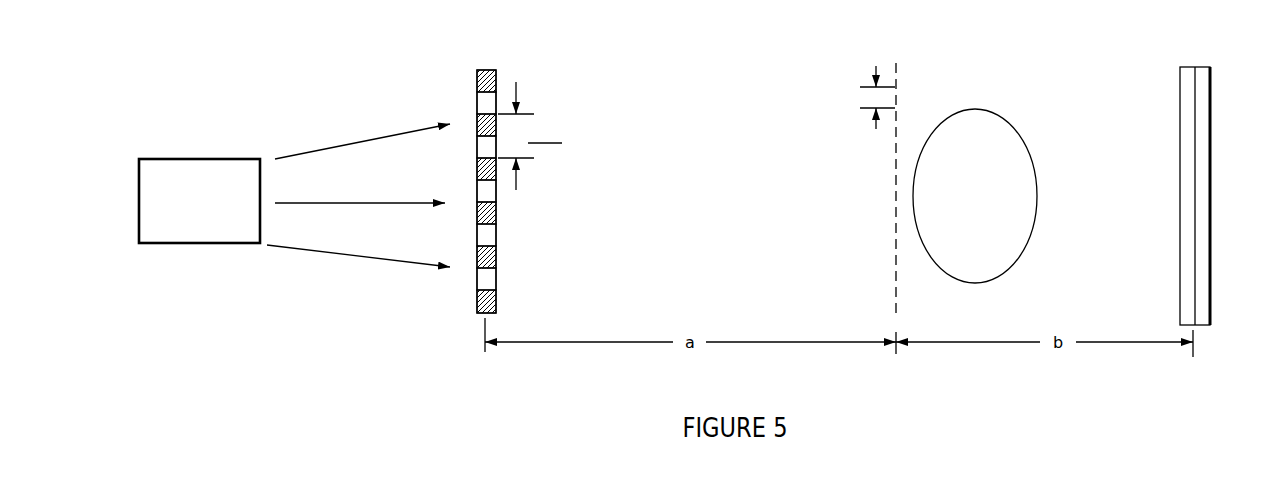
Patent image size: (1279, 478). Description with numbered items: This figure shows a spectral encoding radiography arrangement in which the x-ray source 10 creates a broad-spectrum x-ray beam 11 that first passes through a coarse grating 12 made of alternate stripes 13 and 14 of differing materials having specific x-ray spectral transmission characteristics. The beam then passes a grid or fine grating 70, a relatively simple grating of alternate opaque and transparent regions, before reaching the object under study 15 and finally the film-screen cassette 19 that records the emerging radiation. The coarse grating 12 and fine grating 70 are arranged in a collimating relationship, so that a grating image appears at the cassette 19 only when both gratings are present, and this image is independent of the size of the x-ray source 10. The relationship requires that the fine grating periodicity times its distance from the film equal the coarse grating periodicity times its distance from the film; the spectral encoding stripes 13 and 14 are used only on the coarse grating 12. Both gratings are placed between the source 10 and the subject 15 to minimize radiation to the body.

The x-ray source 10 is at (212, 244).
The x-ray beam 11 is at (358, 208).
The coarse grating 12 is at (550, 206).
The stripe 13 is at (496, 222).
The stripe 14 is at (496, 240).
The object under study 15 is at (993, 110).
The film-screen cassette 19 is at (1210, 88).
The fine grating 70 is at (897, 316).